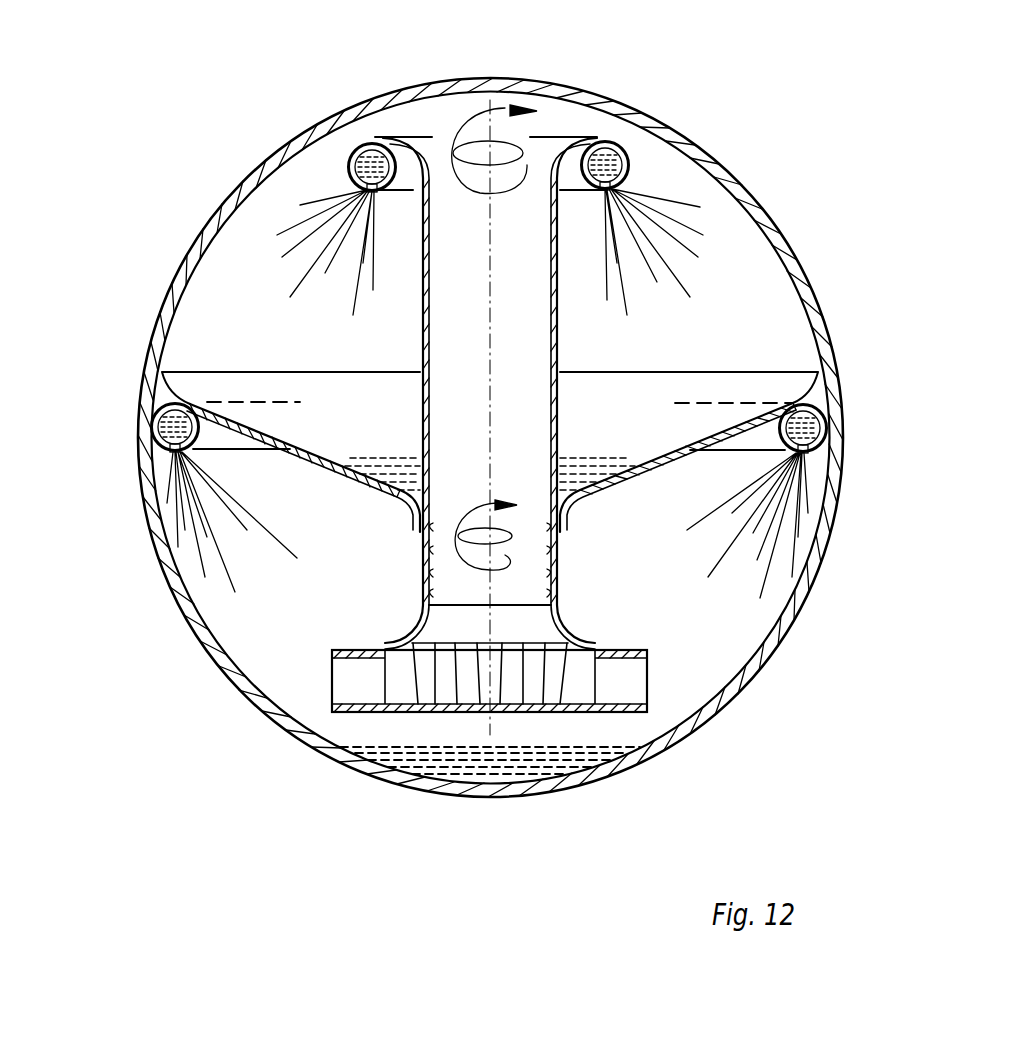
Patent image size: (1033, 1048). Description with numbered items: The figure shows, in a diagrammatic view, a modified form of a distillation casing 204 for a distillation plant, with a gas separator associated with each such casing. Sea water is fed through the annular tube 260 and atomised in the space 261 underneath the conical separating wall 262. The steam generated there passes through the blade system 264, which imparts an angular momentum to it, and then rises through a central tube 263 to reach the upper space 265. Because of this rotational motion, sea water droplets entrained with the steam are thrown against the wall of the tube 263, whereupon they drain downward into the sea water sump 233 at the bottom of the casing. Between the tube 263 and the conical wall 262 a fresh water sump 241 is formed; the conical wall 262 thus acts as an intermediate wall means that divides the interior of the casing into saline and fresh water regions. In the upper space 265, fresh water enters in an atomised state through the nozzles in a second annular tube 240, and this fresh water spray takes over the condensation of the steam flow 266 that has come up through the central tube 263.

The distillation casing 204 is at (698, 158).
The sea water sump 233 is at (558, 767).
The annular tube 240 is at (352, 152).
The fresh water sump 241 is at (383, 467).
The annular tube 260 is at (167, 470).
The space 261 is at (302, 600).
The conical separating wall 262 is at (670, 455).
The central tube 263 is at (553, 570).
The blade system 264 is at (372, 680).
The upper space 265 is at (417, 117).
The steam flow 266 is at (468, 125).